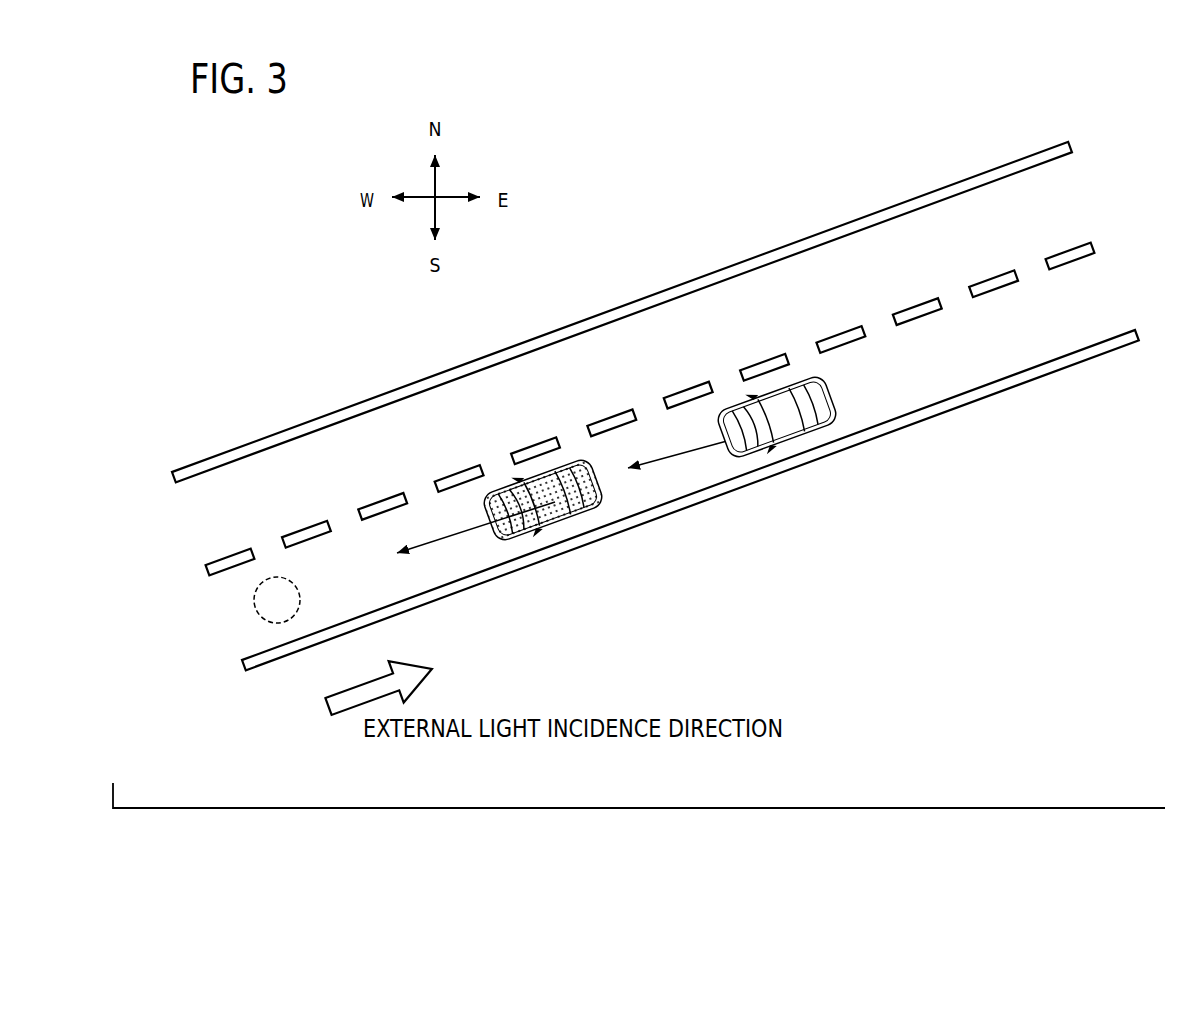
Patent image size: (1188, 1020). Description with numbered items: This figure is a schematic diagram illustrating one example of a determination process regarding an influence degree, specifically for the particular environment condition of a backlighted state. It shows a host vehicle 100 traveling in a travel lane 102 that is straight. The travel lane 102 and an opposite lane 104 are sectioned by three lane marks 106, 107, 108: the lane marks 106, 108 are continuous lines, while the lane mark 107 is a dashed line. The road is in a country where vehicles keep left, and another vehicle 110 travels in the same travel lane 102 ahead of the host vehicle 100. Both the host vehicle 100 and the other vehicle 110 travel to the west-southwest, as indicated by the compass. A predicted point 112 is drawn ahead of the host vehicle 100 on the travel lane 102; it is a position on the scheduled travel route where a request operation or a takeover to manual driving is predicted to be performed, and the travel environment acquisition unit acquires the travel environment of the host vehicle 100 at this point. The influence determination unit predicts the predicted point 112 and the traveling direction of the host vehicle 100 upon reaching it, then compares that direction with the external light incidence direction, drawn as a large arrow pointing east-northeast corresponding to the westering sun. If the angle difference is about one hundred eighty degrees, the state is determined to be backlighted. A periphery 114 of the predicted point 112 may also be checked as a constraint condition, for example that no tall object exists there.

The host vehicle 100 is at (783, 420).
The travel lane 102 is at (1022, 337).
The opposite lane 104 is at (960, 232).
The lane mark 106 is at (1088, 353).
The lane mark 107 is at (1063, 253).
The lane mark 108 is at (992, 176).
The other vehicle 110 is at (558, 512).
The predicted point 112 is at (256, 603).
The periphery 114 is at (275, 682).